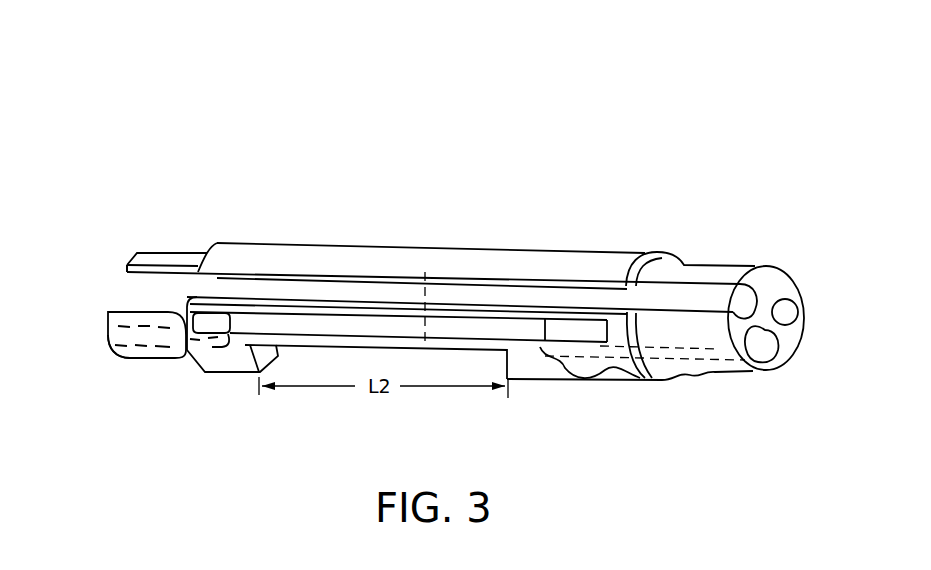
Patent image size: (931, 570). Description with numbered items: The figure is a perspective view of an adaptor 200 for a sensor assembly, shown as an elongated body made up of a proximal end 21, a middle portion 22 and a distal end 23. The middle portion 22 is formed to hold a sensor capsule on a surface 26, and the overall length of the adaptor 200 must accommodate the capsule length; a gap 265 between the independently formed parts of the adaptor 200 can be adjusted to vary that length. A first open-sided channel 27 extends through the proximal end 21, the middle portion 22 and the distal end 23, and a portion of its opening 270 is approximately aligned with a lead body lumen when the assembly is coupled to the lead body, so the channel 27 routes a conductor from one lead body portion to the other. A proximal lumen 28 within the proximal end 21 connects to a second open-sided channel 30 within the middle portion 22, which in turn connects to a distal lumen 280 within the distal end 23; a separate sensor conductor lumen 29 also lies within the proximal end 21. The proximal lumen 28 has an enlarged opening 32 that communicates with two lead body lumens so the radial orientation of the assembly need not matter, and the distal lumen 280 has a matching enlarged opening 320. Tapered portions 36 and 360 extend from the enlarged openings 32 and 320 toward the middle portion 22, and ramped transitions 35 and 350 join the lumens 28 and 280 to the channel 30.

The adaptor 200 is at (452, 70).
The proximal end 21 is at (774, 245).
The middle portion 22 is at (613, 238).
The distal end 23 is at (215, 233).
The surface 26 is at (317, 348).
The first open-sided channel 27 is at (240, 292).
The proximal lumen 28 is at (717, 353).
The sensor conductor lumen 29 is at (785, 312).
The second open-sided channel 30 is at (257, 322).
The enlarged opening 32 is at (760, 362).
The ramped transition 35 is at (562, 378).
The tapered portion 36 is at (664, 363).
The gap 265 is at (437, 263).
The opening 270 is at (770, 282).
The distal lumen 280 is at (125, 352).
The enlarged opening 320 is at (110, 337).
The ramped transition 350 is at (195, 363).
The tapered portion 360 is at (137, 310).